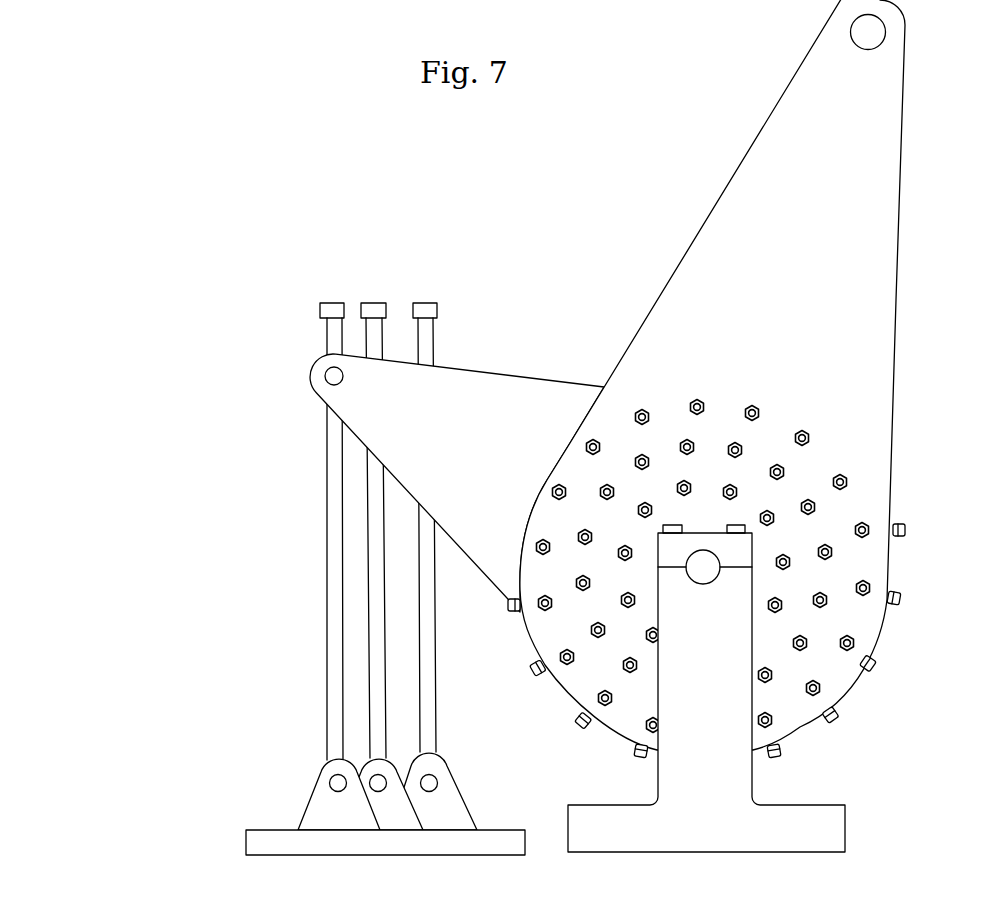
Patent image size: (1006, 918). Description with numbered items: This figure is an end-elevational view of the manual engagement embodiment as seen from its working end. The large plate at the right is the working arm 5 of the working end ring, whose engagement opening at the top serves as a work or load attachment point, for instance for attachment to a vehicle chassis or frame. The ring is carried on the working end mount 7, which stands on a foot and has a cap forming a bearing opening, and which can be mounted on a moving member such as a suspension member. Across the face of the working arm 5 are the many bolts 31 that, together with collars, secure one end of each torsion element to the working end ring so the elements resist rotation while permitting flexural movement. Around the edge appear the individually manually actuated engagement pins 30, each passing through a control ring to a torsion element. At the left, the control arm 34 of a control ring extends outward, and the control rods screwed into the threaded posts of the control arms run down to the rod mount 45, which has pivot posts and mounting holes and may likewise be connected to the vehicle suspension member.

The working arm 5 is at (883, 258).
The working end mount 7 is at (787, 812).
The engagement pins 30 is at (902, 601).
The bolts 31 is at (702, 401).
The control arm 34 is at (465, 383).
The rod mount 45 is at (270, 838).